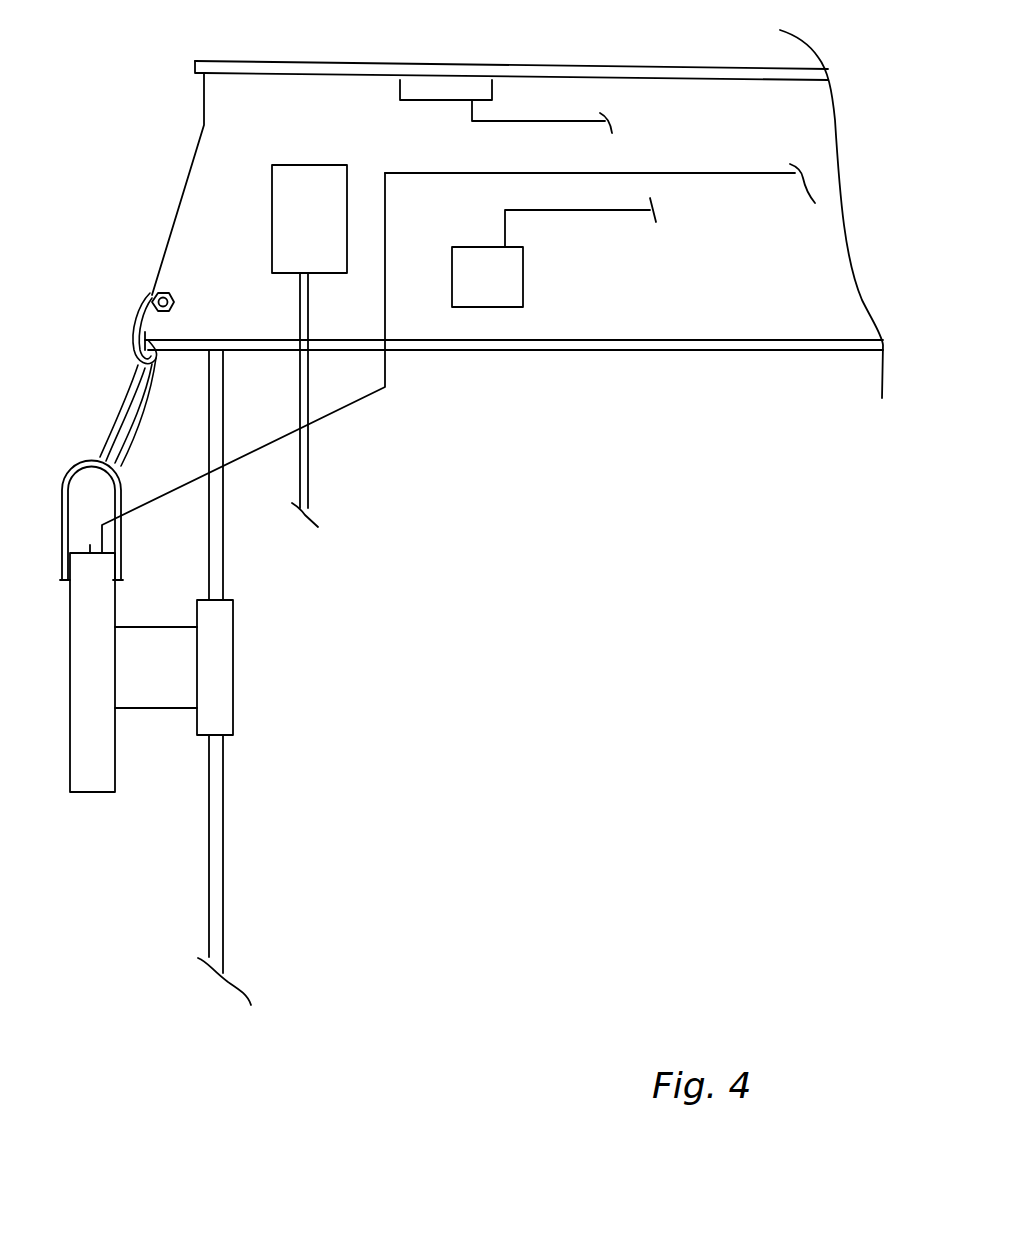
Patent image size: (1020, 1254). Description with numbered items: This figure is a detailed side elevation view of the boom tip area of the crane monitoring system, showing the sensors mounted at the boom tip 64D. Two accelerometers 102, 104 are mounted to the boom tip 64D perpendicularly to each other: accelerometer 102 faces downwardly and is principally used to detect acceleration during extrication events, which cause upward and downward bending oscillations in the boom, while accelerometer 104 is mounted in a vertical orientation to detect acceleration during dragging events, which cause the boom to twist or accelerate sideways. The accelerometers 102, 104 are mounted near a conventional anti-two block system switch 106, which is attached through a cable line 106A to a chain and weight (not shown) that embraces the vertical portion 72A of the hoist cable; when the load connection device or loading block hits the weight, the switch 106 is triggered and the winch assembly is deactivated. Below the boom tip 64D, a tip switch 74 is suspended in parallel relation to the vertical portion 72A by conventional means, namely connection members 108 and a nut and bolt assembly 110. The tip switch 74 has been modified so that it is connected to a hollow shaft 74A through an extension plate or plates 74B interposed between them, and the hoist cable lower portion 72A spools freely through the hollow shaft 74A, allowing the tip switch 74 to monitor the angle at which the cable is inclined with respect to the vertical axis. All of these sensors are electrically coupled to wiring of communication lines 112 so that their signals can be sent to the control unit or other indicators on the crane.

The boom tip 64D is at (597, 320).
The vertical portion of hoist cable 72A is at (224, 925).
The tip switch 74 is at (70, 733).
The hollow shaft 74A is at (233, 685).
The extension plate 74B is at (163, 685).
The accelerometer 102 is at (450, 82).
The accelerometer 104 is at (485, 278).
The anti-two block system switch 106 is at (323, 222).
The cable line 106A is at (297, 307).
The connection members 108 is at (117, 397).
The nut and bolt assembly 110 is at (158, 290).
The lines 112 is at (627, 210).